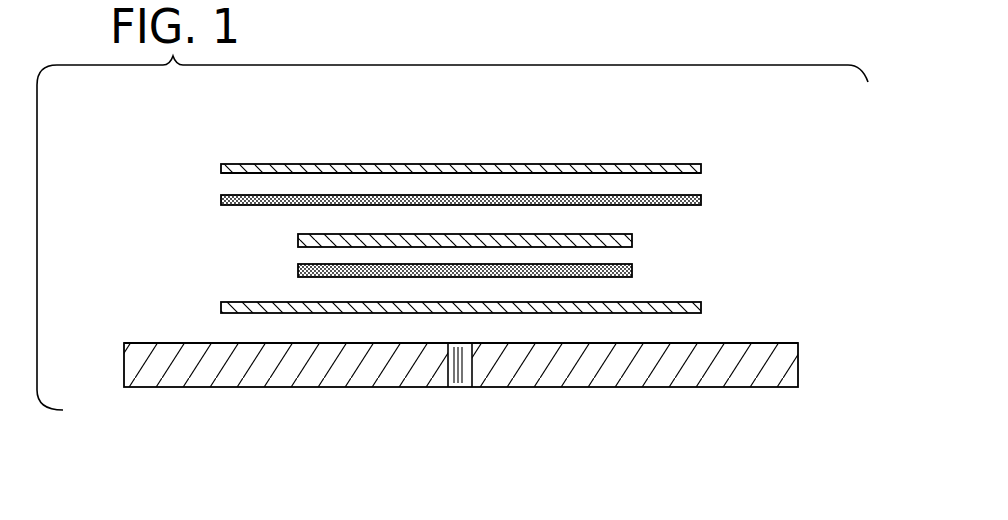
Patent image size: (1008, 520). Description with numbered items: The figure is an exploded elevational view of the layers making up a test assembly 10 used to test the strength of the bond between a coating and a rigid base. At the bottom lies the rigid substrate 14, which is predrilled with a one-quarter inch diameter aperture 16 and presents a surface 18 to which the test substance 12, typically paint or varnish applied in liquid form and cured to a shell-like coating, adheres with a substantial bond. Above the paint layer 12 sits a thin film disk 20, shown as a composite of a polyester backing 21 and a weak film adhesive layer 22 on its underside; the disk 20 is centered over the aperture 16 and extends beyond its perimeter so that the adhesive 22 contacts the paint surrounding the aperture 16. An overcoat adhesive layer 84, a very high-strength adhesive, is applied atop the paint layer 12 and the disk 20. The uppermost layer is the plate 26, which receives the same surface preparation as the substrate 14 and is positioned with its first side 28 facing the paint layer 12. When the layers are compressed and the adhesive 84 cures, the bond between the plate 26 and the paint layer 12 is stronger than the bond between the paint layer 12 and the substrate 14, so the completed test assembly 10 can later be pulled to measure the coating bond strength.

The test assembly 10 is at (757, 147).
The test substance 12 is at (683, 298).
The rigid substrate 14 is at (803, 365).
The aperture 16 is at (471, 369).
The surface 18 is at (750, 341).
The thin film disk 20 is at (431, 248).
The polyester backing 21 is at (297, 240).
The film adhesive layer 22 is at (297, 269).
The plate 26 is at (560, 162).
The first side 28 is at (668, 174).
The overcoat adhesive layer 84 is at (668, 205).